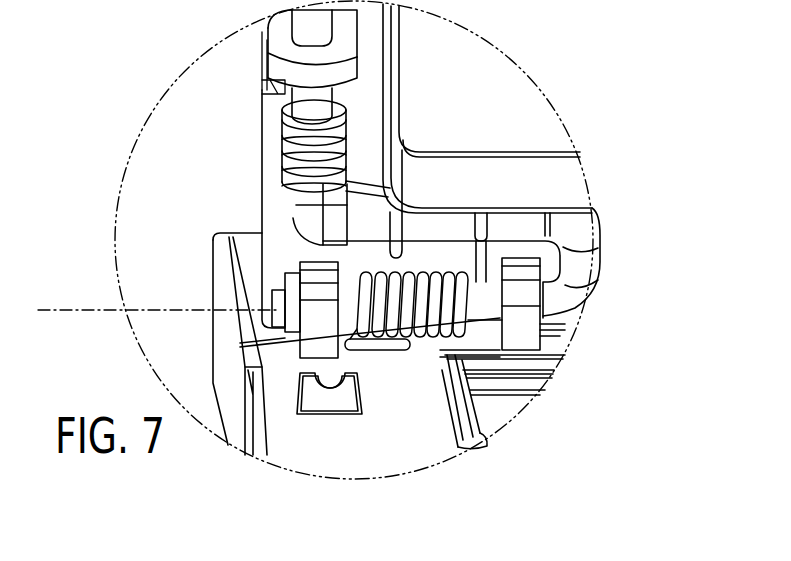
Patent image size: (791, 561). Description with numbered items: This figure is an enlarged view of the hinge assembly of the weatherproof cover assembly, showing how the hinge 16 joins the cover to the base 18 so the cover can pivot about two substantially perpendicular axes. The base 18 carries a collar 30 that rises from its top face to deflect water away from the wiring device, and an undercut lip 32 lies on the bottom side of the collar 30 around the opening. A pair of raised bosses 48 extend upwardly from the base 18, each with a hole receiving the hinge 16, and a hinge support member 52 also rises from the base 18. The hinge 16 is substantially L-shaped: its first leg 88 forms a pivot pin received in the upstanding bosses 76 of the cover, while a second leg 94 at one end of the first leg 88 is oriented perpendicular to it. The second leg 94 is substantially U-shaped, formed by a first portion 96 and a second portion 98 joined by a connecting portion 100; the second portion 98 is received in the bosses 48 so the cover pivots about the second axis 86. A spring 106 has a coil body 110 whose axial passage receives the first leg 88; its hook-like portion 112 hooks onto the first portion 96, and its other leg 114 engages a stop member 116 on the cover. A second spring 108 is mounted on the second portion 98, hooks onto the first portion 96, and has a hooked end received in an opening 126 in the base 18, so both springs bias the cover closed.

The hinge 16 is at (276, 225).
The base 18 is at (196, 257).
The collar 30 is at (543, 360).
The undercut lip 32 is at (510, 380).
The raised boss 48 is at (317, 263).
The hinge support member 52 is at (327, 405).
The upstanding boss 76 is at (360, 62).
The second axis 86 is at (85, 310).
The first leg 88 is at (300, 107).
The second leg 94 is at (585, 236).
The first portion 96 is at (450, 230).
The second portion 98 is at (300, 337).
The connecting portion 100 is at (582, 268).
The spring 106 is at (268, 167).
The spring 108 is at (437, 338).
The body 110 is at (297, 133).
The hook-like portion 112 is at (405, 233).
The leg 114 is at (263, 101).
The stop member 116 is at (262, 62).
The opening 126 is at (405, 348).